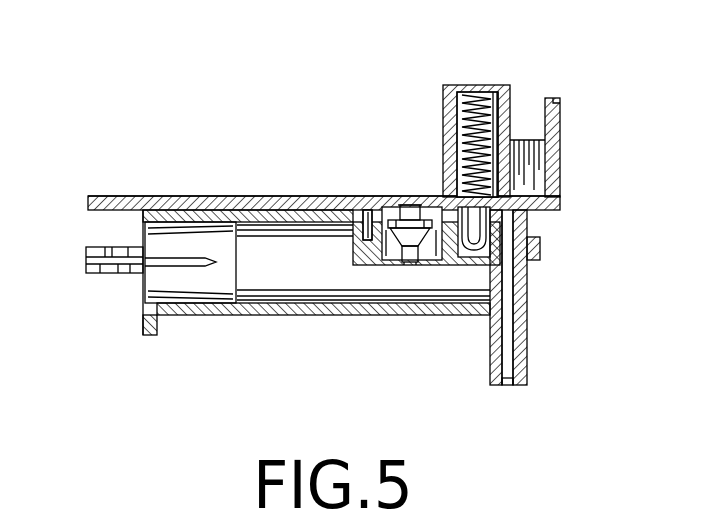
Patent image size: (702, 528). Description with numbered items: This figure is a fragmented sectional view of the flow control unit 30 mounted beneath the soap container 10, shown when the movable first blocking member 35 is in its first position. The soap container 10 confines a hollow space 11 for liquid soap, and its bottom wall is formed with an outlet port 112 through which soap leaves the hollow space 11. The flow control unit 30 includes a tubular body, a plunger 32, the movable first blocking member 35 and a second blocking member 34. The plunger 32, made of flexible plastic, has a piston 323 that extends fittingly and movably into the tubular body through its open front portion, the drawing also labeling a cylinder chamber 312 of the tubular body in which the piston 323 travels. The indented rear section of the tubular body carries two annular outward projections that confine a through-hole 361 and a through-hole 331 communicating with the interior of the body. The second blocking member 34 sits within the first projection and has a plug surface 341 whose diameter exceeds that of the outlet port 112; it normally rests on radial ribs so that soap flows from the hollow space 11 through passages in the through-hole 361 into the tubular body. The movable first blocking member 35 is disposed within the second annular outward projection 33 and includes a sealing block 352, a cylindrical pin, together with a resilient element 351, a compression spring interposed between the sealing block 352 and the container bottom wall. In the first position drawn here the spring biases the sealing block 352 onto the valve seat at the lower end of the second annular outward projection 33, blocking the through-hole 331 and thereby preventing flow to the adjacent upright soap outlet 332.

The soap container 10 is at (258, 196).
The hollow space 11 is at (216, 166).
The flow control unit 30 is at (316, 330).
The plunger 32 is at (102, 246).
The second annular outward projection 33 is at (447, 166).
The second blocking member 34 is at (400, 266).
The movable first blocking member 35 is at (512, 115).
The outlet port 112 is at (410, 205).
The cylinder chamber 312 is at (292, 283).
The piston 323 is at (217, 282).
The through-hole 331 is at (480, 268).
The soap outlet 332 is at (508, 386).
The plug surface 341 is at (392, 202).
The resilient element 351 is at (444, 130).
The sealing block 352 is at (505, 224).
The through-hole 361 is at (419, 268).